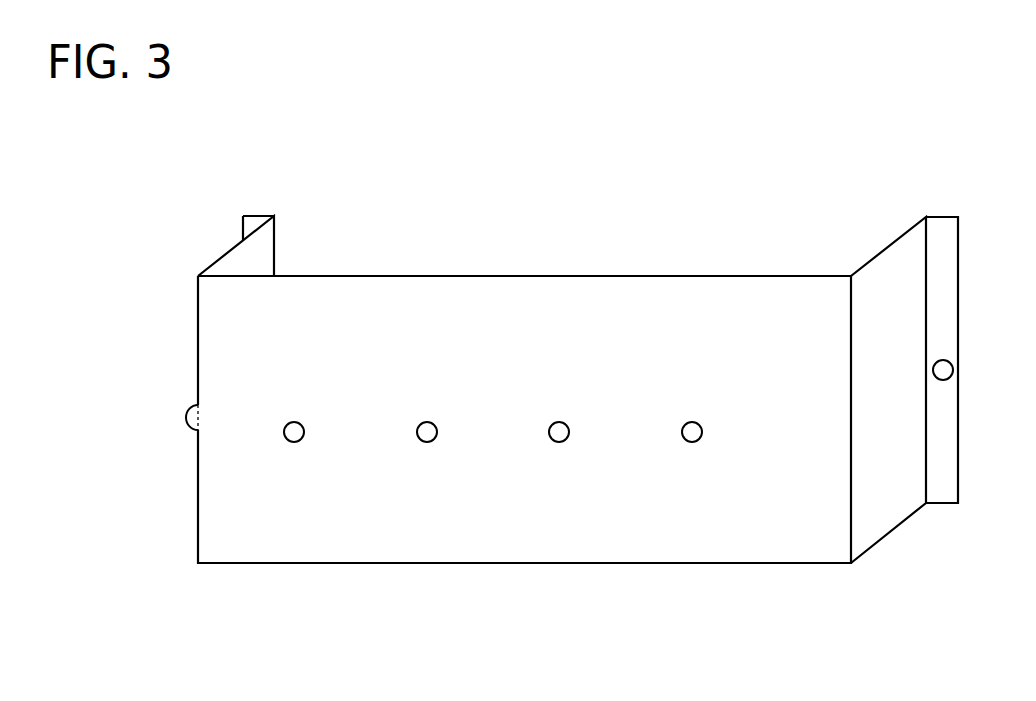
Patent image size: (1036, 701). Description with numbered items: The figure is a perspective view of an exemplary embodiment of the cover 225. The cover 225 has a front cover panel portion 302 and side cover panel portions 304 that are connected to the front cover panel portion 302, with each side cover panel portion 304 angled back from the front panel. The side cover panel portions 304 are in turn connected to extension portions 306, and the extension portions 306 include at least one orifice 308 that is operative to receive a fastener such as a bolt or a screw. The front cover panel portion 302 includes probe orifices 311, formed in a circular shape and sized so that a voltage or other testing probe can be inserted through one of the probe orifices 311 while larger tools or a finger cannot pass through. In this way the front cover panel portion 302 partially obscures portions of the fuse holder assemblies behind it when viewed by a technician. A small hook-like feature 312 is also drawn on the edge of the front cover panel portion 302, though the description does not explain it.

The cover 225 is at (788, 166).
The front cover panel portion 302 is at (541, 292).
The side cover panel portions 304 is at (237, 258).
The extension portions 306 is at (252, 222).
The orifice 308 is at (947, 360).
The probe orifices 311 is at (295, 421).
The hook 312 is at (188, 415).